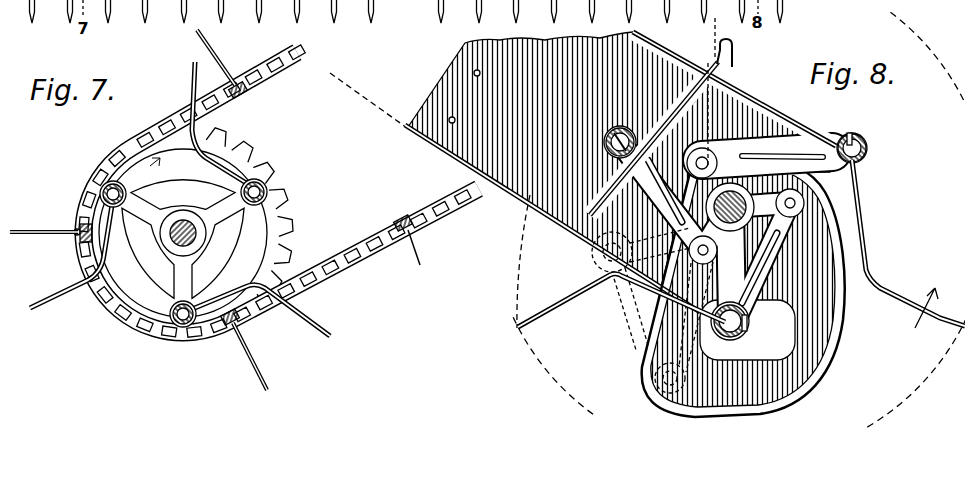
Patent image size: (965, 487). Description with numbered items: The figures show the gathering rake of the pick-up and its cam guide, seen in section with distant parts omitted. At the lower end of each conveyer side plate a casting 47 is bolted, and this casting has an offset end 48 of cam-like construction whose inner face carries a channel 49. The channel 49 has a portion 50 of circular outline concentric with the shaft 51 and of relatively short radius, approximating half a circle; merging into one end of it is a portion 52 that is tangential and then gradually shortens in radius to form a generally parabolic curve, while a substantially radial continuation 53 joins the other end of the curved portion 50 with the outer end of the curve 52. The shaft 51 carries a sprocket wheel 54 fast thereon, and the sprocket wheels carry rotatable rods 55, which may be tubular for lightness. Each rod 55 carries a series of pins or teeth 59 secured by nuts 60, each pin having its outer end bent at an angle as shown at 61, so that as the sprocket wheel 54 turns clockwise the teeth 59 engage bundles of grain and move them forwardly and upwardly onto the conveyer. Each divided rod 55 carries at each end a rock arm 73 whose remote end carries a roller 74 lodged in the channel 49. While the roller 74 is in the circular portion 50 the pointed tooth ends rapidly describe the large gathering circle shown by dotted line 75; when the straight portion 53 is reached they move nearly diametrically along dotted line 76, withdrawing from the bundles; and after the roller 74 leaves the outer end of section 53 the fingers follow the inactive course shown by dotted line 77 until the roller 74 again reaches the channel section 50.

In FIG. 8, the casting 47 is at (512, 196).
In FIG. 8, the offset end 48 is at (834, 360).
In FIG. 8, the channel 49 is at (806, 378).
In FIG. 8, the concentric portion of the channel 50 is at (792, 136).
In FIG. 7, the shaft 51 is at (200, 232).
In FIG. 8, the shaft 51 is at (742, 178).
In FIG. 8, the tangential portion of the channel 52 is at (828, 326).
In FIG. 8, the radial continuation 53 is at (700, 287).
In FIG. 7, the sprocket wheel 54 is at (298, 246).
In FIG. 7, the rod 55 is at (95, 188).
In FIG. 8, the rod 55 is at (606, 134).
In FIG. 7, the tooth 59 is at (232, 152).
In FIG. 8, the tooth 59 is at (637, 110).
In FIG. 7, the nut 60 is at (122, 193).
In FIG. 8, the nut 60 is at (612, 160).
In FIG. 7, the bent outer end portion 61 is at (155, 133).
In FIG. 8, the bent outer end portion 61 is at (733, 55).
In FIG. 8, the rock arm 73 is at (735, 150).
In FIG. 8, the roller 74 is at (698, 150).
In FIG. 8, the dotted line circle 75 is at (738, 220).
In FIG. 8, the dotted line path 76 is at (714, 48).
In FIG. 8, the dotted line path 77 is at (518, 258).